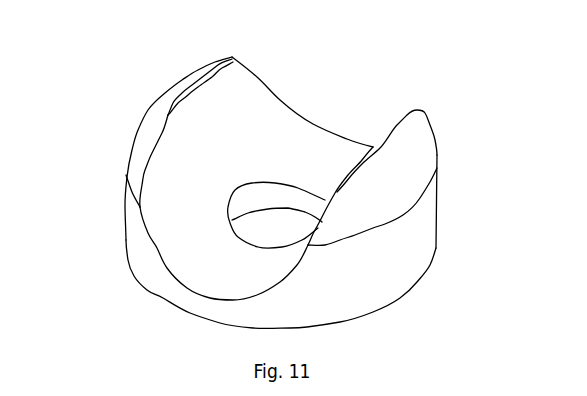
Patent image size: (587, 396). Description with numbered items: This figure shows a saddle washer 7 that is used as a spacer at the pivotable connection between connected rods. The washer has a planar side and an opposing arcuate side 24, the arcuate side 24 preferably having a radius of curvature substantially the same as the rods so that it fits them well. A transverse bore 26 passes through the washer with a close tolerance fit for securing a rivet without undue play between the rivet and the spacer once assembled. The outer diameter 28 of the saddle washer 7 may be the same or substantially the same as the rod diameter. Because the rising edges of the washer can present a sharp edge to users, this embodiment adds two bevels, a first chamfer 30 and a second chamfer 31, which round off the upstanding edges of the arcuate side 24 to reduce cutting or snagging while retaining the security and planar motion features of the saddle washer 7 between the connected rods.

The saddle washer 7 is at (437, 228).
The arcuate side 24 is at (168, 202).
The transverse bore 26 is at (252, 231).
The outer diameter 28 is at (162, 298).
The first chamfer 30 is at (148, 119).
The second chamfer 31 is at (183, 92).